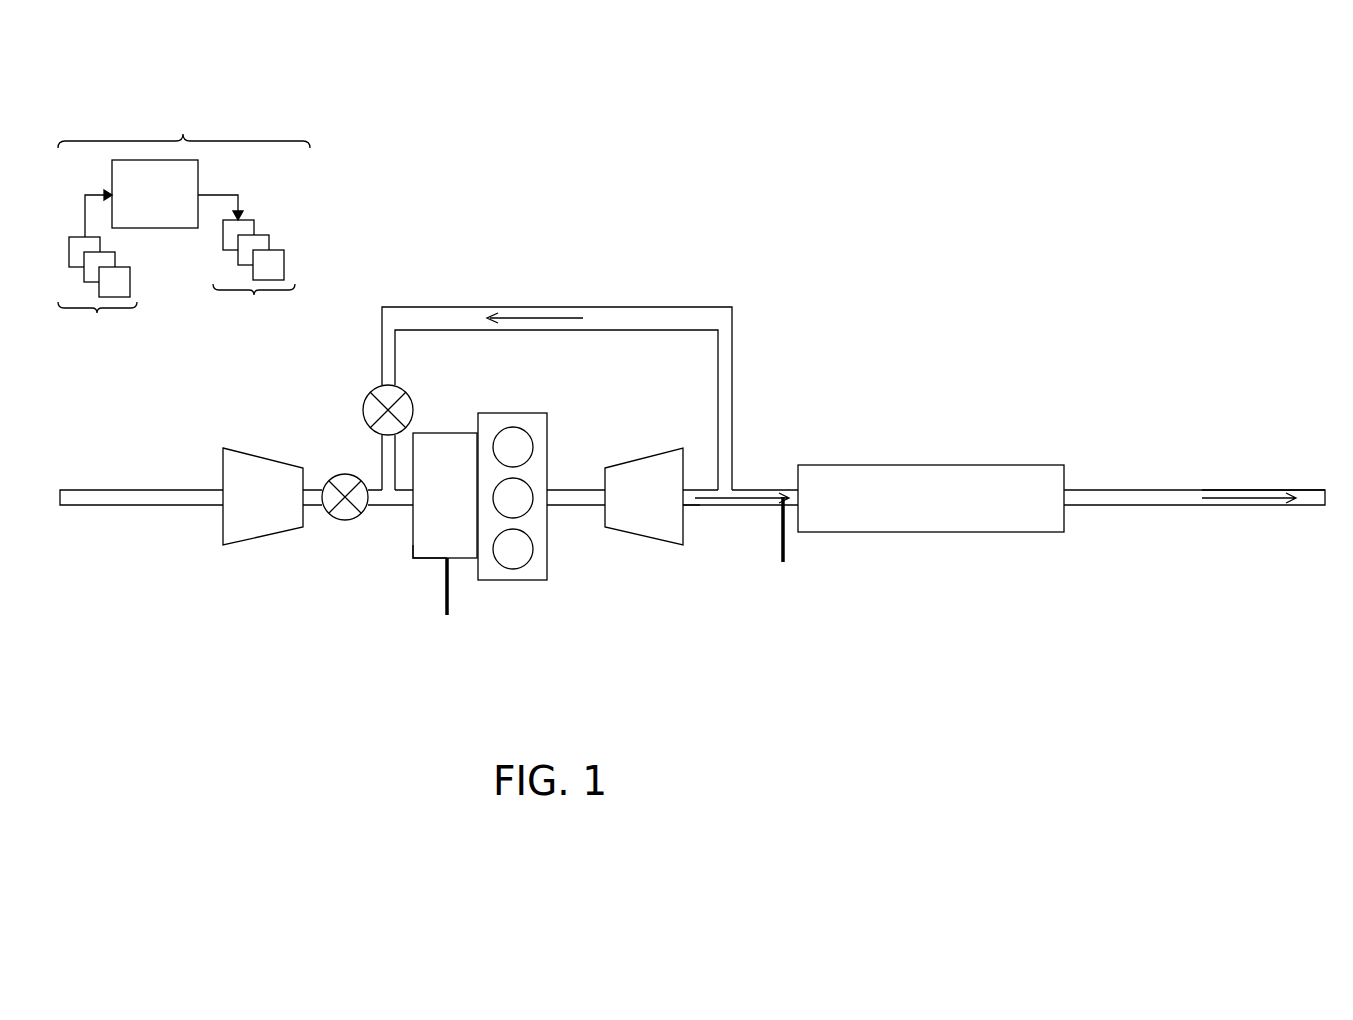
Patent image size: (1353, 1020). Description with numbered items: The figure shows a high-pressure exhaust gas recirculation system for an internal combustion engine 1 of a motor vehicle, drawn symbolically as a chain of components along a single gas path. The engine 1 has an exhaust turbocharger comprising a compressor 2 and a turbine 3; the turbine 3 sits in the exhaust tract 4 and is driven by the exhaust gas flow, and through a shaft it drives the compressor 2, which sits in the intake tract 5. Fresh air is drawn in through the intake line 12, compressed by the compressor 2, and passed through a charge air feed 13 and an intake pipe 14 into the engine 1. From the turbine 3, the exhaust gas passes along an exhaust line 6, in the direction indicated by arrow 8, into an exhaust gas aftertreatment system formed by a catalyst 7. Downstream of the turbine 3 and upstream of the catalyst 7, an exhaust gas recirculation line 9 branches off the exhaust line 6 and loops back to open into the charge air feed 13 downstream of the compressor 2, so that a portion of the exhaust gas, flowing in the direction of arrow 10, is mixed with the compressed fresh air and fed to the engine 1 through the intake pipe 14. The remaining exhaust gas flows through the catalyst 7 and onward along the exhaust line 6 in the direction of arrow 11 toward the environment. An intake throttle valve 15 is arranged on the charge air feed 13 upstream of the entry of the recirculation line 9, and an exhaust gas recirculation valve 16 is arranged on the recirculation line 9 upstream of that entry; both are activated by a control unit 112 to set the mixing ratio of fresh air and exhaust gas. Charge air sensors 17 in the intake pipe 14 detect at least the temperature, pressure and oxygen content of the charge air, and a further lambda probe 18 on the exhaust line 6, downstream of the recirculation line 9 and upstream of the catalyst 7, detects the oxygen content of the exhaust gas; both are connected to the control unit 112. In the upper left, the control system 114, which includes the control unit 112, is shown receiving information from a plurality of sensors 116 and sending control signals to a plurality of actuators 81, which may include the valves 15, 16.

The internal combustion engine 1 is at (547, 572).
The compressor 2 is at (262, 545).
The turbine 3 is at (668, 545).
The exhaust tract 4 is at (750, 618).
The intake tract 5 is at (291, 618).
The exhaust line 6 is at (742, 505).
The catalyst 7 is at (905, 532).
The arrow 8 is at (740, 490).
The exhaust gas recirculation line 9 is at (633, 307).
The arrow 10 is at (530, 318).
The arrow 11 is at (1247, 490).
The intake line 12 is at (133, 505).
The charge air feed 13 is at (397, 508).
The intake pipe 14 is at (428, 560).
The intake throttle valve 15 is at (343, 520).
The exhaust gas recirculation valve 16 is at (362, 410).
The charge air sensors 17 is at (450, 604).
The further lambda probe 18 is at (786, 545).
The actuators 81 is at (247, 266).
The control unit 112 is at (155, 194).
The control system 114 is at (184, 222).
The sensors 116 is at (97, 272).